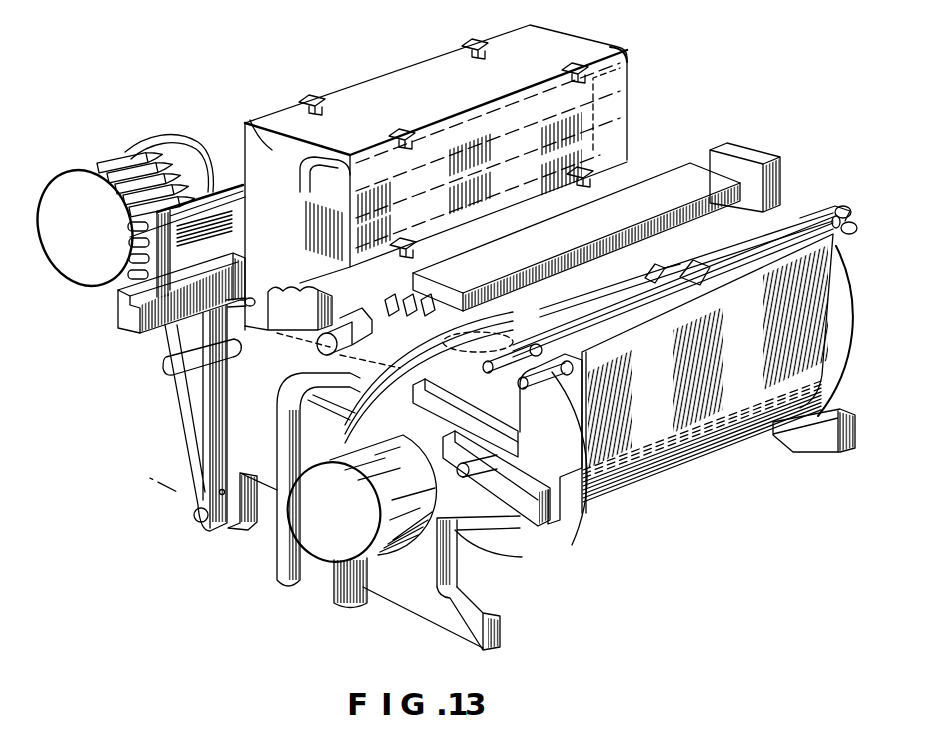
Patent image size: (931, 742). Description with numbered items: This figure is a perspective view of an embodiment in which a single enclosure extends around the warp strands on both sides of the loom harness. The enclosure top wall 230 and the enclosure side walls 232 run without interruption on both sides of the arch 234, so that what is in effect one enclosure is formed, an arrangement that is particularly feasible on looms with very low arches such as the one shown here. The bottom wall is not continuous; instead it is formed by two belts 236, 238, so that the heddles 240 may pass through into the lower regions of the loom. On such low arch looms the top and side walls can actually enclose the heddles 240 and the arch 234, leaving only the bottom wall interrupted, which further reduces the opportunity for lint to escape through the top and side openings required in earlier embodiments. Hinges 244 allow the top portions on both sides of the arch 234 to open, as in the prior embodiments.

The enclosure top wall 230 is at (417, 82).
The enclosure side walls 232 is at (250, 120).
The arch 234 is at (637, 66).
The belt 236 is at (232, 287).
The belt 238 is at (490, 327).
The heddles 240 is at (495, 192).
The hinges 244 is at (310, 98).